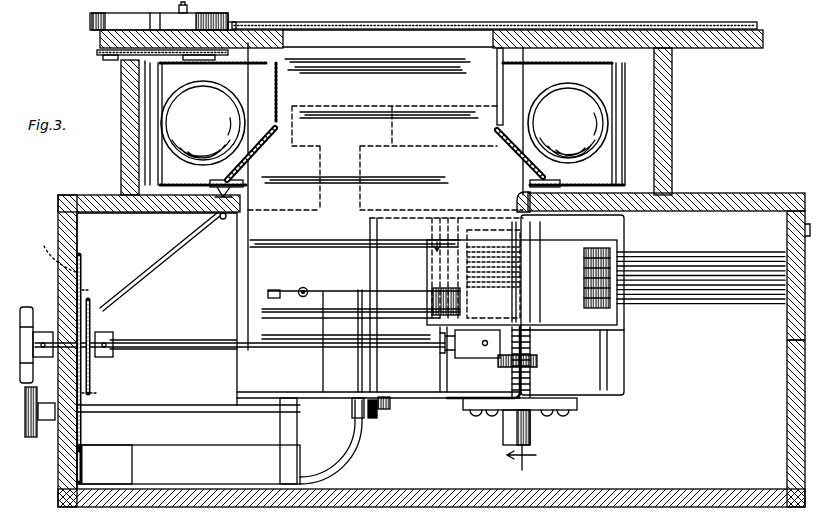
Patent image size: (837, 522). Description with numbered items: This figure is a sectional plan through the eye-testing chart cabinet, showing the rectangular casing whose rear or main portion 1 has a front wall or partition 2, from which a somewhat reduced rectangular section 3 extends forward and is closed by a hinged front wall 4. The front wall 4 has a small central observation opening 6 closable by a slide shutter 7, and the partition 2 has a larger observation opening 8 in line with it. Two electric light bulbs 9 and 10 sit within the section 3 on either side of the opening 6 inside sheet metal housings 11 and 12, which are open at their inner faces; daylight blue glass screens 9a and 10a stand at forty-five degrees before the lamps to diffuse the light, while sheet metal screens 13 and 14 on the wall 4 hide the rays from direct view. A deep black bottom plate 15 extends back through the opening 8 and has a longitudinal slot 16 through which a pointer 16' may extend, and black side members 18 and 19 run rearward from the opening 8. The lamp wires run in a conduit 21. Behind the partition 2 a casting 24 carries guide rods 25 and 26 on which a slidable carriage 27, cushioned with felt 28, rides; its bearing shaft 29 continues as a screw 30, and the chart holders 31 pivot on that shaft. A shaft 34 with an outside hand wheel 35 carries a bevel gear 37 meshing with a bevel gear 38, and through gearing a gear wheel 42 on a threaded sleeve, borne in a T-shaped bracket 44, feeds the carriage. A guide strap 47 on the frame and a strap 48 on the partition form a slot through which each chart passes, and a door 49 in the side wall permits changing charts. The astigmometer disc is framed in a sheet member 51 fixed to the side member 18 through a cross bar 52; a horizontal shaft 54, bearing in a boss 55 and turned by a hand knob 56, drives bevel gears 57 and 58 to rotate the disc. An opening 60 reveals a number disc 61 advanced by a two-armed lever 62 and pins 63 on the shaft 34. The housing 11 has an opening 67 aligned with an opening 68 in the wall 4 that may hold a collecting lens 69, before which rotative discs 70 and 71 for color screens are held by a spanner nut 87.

The rear or main portion of the casing 1 is at (788, 425).
The front wall or partition 2 is at (138, 215).
The reduced rectangular section 3 is at (121, 136).
The front wall 4 is at (660, 31).
The central observation opening 6 is at (521, 461).
The slide shutter 7 is at (596, 17).
The observation opening 8 is at (373, 44).
The electric light bulb 9 is at (50, 57).
The daylight blue glass screen 9a is at (262, 147).
The electric light bulb 10 is at (568, 123).
The daylight blue glass screen 10a is at (520, 158).
The sheet metal housing 11 is at (158, 70).
The sheet metal housing 12 is at (612, 72).
The sheet metal screen 13 is at (270, 98).
The sheet metal screen 14 is at (497, 96).
The bottom plate 15 is at (440, 170).
The longitudinal slot 16 is at (364, 327).
The pointer 16' is at (361, 287).
The side member 18 is at (237, 307).
The side member 19 is at (516, 204).
The conduit 21 is at (188, 464).
The casting 24 is at (625, 381).
The guide rod 25 is at (440, 372).
The guide rod 26 is at (608, 362).
The slidable carriage 27 is at (579, 327).
The cushioning material 28 is at (440, 243).
The bearing shaft 29 is at (513, 247).
The screw 30 is at (530, 381).
The chart holders 31 is at (302, 314).
The shaft 34 is at (170, 352).
The hand wheel 35 is at (30, 306).
The bevel gear 37 is at (493, 358).
The bevel gear 38 is at (538, 362).
The gear wheel 42 is at (578, 410).
The T-shaped bracket 44 is at (503, 425).
The guide strap 47 is at (532, 338).
The strap 48 is at (513, 226).
The door 49 is at (792, 234).
The rectangular sheet member 51 is at (300, 392).
The cross bar 52 is at (298, 400).
The horizontal shaft 54 is at (172, 414).
The boss 55 is at (354, 418).
The hand knob 56 is at (31, 438).
The bevel gear 57 is at (373, 420).
The bevel gear 58 is at (388, 410).
The opening 60 is at (47, 253).
The number disc 61 is at (85, 270).
The two-armed lever 62 is at (94, 380).
The pins 63 is at (104, 336).
The opening 67 is at (207, 65).
The opening 68 is at (200, 16).
The collecting lens 69 is at (233, 27).
The rotative disc 70 is at (99, 56).
The rotative disc 71 is at (90, 20).
The spanner nut 87 is at (148, 14).